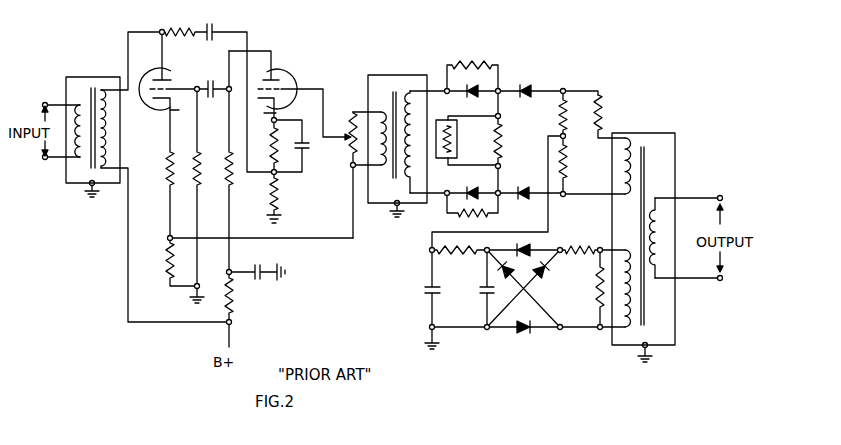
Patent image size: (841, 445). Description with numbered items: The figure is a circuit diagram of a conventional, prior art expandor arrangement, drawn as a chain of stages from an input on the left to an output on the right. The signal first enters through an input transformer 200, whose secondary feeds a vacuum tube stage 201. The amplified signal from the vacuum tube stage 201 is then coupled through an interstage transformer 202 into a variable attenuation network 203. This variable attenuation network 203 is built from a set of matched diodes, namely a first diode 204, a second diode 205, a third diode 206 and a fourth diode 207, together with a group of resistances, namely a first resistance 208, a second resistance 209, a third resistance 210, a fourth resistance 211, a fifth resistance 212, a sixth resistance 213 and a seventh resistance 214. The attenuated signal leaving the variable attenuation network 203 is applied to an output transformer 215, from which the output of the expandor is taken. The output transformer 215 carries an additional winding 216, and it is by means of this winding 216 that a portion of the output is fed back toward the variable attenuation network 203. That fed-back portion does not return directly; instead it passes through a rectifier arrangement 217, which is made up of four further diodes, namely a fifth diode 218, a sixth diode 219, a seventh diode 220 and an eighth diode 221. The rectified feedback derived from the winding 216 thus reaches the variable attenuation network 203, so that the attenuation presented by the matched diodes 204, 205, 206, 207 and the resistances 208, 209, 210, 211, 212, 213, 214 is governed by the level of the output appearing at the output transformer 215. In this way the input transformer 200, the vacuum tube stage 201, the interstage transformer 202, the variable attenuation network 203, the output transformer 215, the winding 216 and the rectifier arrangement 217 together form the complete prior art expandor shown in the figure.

The input transformer 200 is at (106, 62).
The vacuum tube stage 201 is at (208, 70).
The interstage transformer 202 is at (409, 64).
The variable attenuation network 203 is at (542, 134).
The matched diode 204 is at (472, 96).
The matched diode 205 is at (543, 74).
The matched diode 206 is at (473, 188).
The matched diode 207 is at (529, 199).
The resistance 208 is at (490, 62).
The resistance 209 is at (457, 147).
The resistance 210 is at (462, 213).
The resistance 211 is at (502, 147).
The resistance 212 is at (565, 90).
The resistance 213 is at (568, 160).
The resistance 214 is at (607, 118).
The output transformer 215 is at (670, 147).
The winding 216 is at (632, 248).
The rectifier arrangement 217 is at (577, 312).
The diode 218 is at (530, 246).
The diode 219 is at (546, 271).
The diode 220 is at (500, 268).
The diode 221 is at (519, 332).